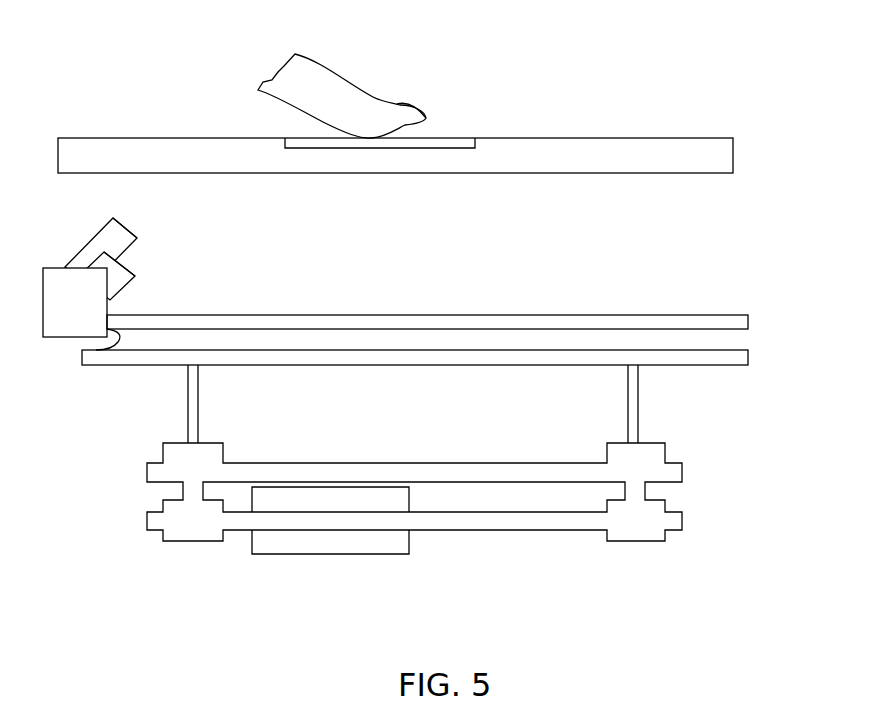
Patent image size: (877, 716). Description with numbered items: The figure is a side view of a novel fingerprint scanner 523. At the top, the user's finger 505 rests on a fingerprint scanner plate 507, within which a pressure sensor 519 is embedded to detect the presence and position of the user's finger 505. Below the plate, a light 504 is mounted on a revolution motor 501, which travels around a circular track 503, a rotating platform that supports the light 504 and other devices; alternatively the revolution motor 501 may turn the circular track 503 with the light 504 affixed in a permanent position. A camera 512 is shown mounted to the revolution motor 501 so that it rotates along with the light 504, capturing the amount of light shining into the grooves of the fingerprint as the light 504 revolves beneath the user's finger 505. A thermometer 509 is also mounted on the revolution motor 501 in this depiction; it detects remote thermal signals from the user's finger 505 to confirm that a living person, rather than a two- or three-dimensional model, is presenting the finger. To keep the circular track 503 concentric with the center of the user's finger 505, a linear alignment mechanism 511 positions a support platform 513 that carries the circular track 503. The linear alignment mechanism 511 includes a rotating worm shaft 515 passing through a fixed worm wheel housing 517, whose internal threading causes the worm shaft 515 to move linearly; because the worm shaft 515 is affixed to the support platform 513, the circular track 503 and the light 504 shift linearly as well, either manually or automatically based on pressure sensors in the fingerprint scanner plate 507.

The revolution motor 501 is at (55, 340).
The circular track 503 is at (726, 332).
The light 504 is at (130, 268).
The user's finger 505 is at (367, 93).
The fingerprint scanner plate 507 is at (550, 138).
The thermometer 509 is at (83, 250).
The linear alignment mechanism 511 is at (527, 596).
The camera 512 is at (92, 237).
The support platform 513 is at (190, 543).
The worm shaft 515 is at (487, 531).
The worm wheel housing 517 is at (395, 556).
The pressure sensor 519 is at (297, 137).
The fingerprint scanner 523 is at (189, 84).